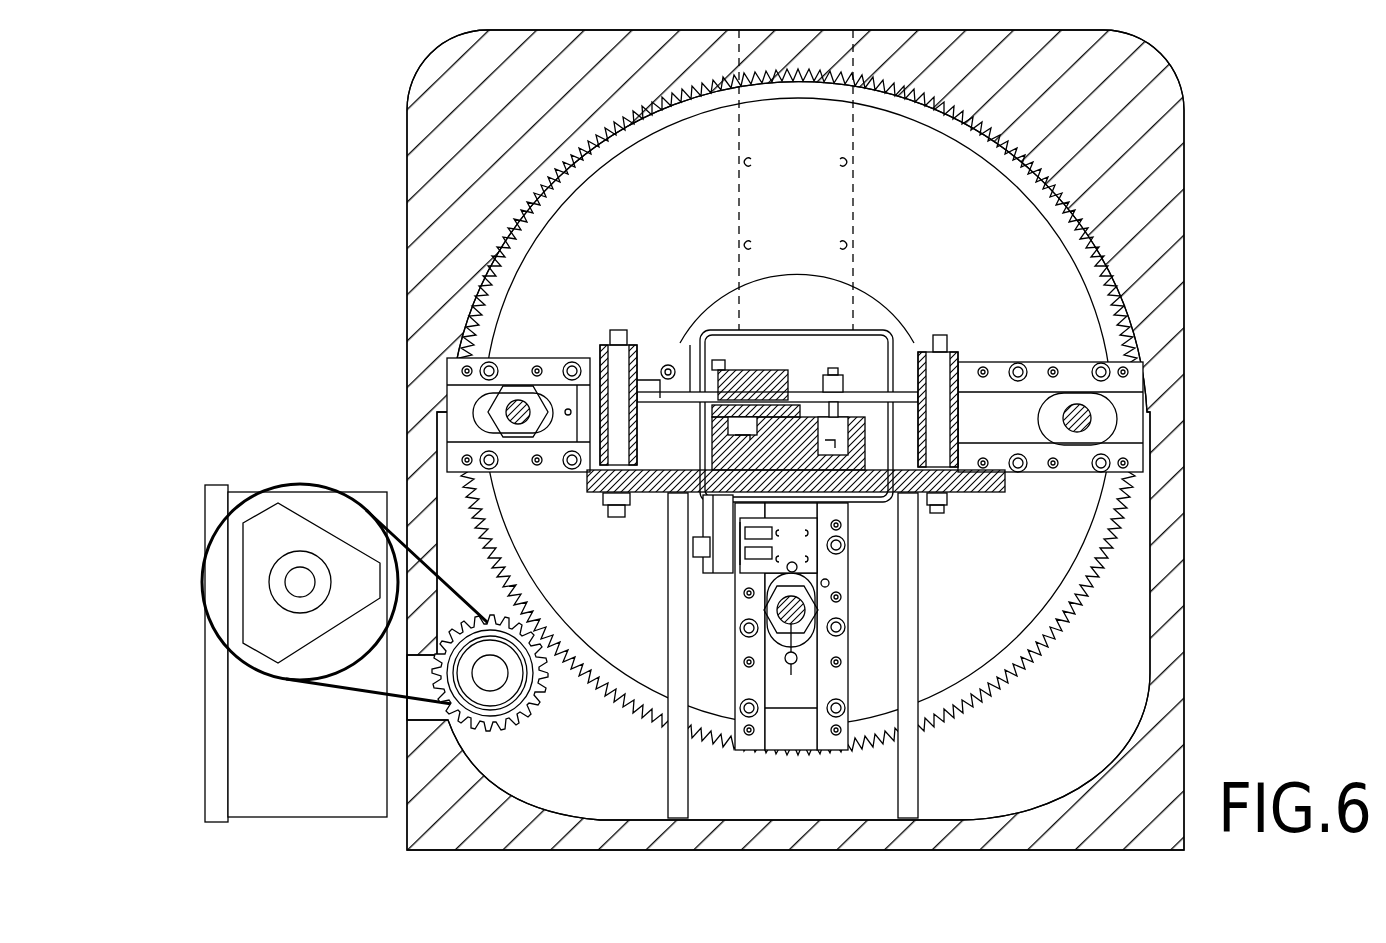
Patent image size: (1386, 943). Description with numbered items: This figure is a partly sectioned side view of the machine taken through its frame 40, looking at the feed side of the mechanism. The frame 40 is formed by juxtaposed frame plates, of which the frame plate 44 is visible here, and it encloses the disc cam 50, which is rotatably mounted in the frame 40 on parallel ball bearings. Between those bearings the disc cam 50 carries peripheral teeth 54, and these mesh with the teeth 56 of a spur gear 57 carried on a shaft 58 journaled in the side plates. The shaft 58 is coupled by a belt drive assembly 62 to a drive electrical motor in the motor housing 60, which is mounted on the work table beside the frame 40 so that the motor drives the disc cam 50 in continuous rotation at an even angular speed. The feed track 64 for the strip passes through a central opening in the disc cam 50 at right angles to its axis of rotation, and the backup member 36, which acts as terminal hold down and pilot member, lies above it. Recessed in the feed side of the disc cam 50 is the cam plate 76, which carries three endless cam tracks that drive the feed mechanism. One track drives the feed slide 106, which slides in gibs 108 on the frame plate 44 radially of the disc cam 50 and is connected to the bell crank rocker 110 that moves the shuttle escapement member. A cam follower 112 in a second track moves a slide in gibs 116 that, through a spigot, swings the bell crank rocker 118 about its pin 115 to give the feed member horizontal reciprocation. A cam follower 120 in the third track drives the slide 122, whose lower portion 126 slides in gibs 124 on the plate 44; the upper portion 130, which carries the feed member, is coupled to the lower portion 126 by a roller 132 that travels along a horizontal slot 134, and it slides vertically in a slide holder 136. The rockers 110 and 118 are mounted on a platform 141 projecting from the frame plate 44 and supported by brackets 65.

The backup member 36 is at (752, 345).
The frame 40 is at (401, 260).
The frame plate 44 is at (935, 345).
The disc cam 50 is at (512, 190).
The peripheral teeth 54 is at (567, 158).
The teeth 56 is at (545, 690).
The spur gear 57 is at (497, 702).
The shaft 58 is at (485, 680).
The motor housing 60 is at (322, 762).
The belt drive assembly 62 is at (357, 482).
The feed track 64 is at (793, 330).
The brackets 65 is at (668, 765).
The cam plate 76 is at (682, 198).
The feed slide 106 is at (833, 370).
The gibs 108 is at (514, 357).
The rocker 110 is at (870, 395).
The cam follower 112 is at (667, 363).
The pin 115 is at (618, 345).
The gibs 116 is at (1028, 447).
The rocker 118 is at (690, 348).
The cam follower 120 is at (791, 639).
The slide 122 is at (845, 593).
The gibs 124 is at (745, 612).
The lower portion 126 is at (833, 586).
The upper portion 130 is at (722, 368).
The roller 132 is at (740, 572).
The horizontal slot 134 is at (815, 568).
The slide holder 136 is at (715, 522).
The platform 141 is at (1000, 493).